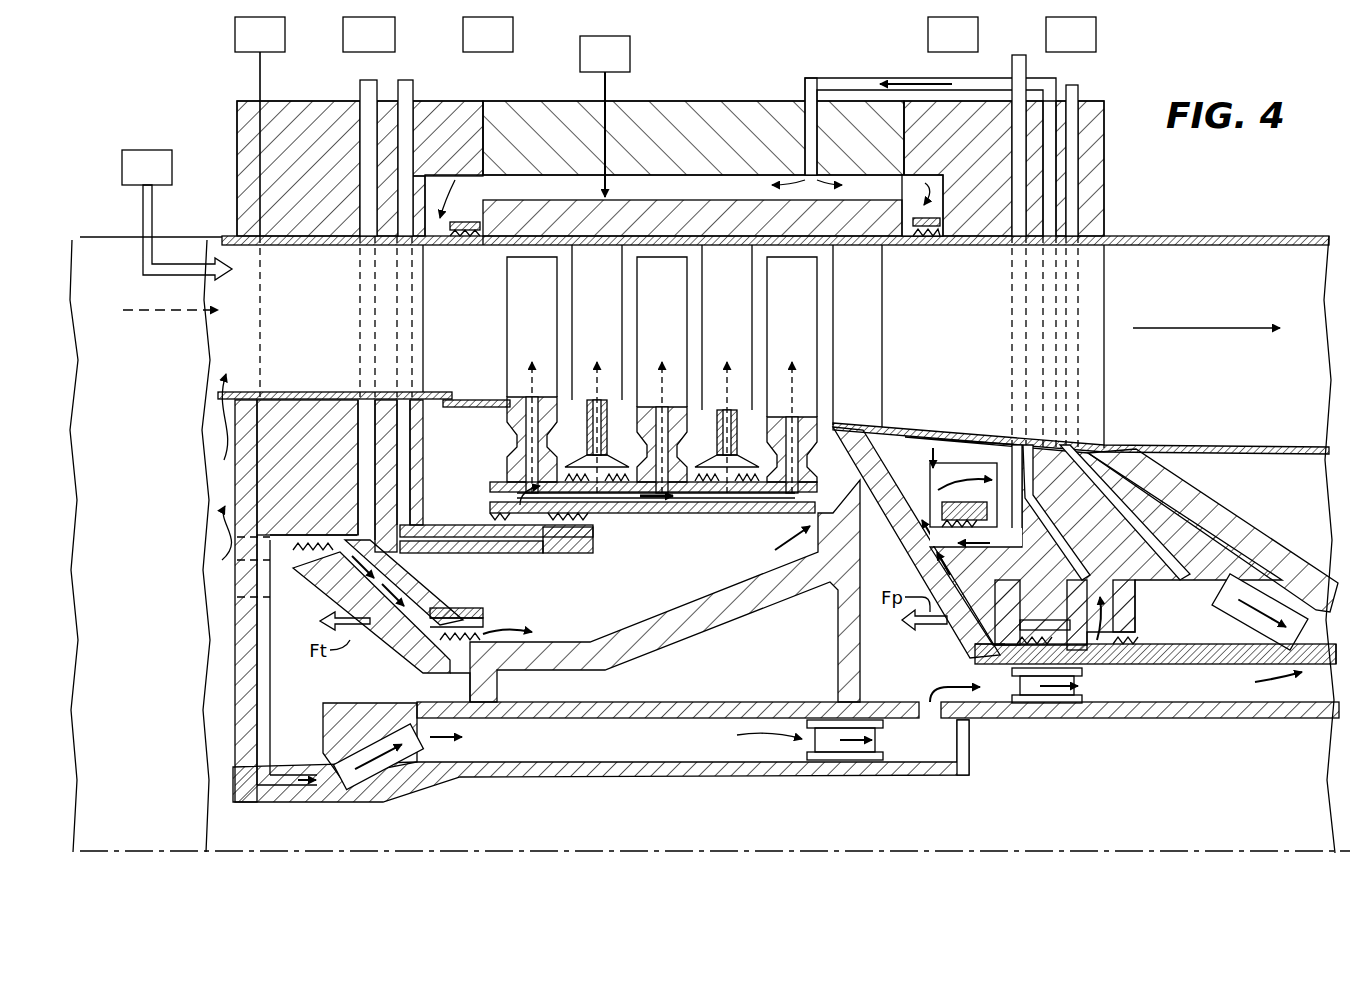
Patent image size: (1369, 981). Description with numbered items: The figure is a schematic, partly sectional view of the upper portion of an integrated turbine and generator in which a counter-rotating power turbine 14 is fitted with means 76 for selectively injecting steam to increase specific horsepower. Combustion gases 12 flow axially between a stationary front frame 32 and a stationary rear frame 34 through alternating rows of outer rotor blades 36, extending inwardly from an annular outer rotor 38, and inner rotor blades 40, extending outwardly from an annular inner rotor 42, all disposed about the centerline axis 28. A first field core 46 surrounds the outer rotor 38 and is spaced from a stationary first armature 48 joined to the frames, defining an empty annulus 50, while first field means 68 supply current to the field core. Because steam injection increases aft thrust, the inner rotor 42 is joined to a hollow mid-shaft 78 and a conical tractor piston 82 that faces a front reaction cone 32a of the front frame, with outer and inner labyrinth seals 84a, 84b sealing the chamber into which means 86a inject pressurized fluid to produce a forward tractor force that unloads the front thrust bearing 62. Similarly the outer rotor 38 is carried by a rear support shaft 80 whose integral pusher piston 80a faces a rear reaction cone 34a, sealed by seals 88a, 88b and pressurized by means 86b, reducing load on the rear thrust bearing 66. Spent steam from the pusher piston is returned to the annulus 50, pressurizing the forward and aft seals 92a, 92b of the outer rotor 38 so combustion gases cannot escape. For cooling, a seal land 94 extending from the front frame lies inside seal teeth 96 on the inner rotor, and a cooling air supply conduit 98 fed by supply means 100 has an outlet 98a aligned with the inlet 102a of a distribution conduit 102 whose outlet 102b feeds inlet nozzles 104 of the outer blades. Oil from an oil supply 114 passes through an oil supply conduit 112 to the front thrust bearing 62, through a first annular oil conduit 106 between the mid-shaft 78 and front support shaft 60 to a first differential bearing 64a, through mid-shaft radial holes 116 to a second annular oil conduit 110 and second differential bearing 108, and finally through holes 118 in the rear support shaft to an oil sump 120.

The combustion gases 12 is at (168, 322).
The power turbine 14 is at (1185, 212).
The centerline axis 28 is at (971, 851).
The front frame 32 is at (230, 490).
The front reaction cone 32a is at (432, 600).
The rear frame 34 is at (1105, 298).
The rear reaction cone 34a is at (1002, 600).
The outer rotor blades 36 is at (652, 336).
The outer rotor 38 is at (495, 248).
The inner rotor blades 40 is at (662, 337).
The inner rotor 42 is at (785, 518).
The first field core 46 is at (692, 218).
The first armature 48 is at (670, 168).
The annulus 50 is at (543, 188).
The front support shaft 60 is at (520, 776).
The front thrust bearing 62 is at (385, 770).
The first differential bearing 64a is at (850, 764).
The rear thrust bearing 66 is at (1284, 580).
The first field means 68 is at (605, 116).
The steam injection means 76 is at (177, 215).
The mid-shaft 78 is at (752, 702).
The rear support shaft 80 is at (1151, 666).
The pusher piston 80a is at (912, 574).
The tractor piston 82 is at (405, 645).
The outer labyrinth seal 84a is at (293, 560).
The inner labyrinth seal 84b is at (492, 622).
The pressurized fluid injecting means 86a is at (369, 80).
The pressurized fluid injecting means 86b is at (977, 232).
The outer labyrinth seal 88a is at (915, 494).
The inner labyrinth seal 88b is at (1007, 640).
The forward labyrinth seal 92a is at (452, 240).
The aft labyrinth seal 92b is at (926, 248).
The seal land 94 is at (482, 560).
The labyrinth seal teeth 96 is at (590, 520).
The cooling air supply conduit 98 is at (433, 530).
The supply conduit outlet 98a is at (565, 553).
The cooling air supply means 100 is at (455, 207).
The distribution conduit 102 is at (705, 500).
The distribution conduit inlet 102a is at (492, 497).
The distribution conduit outlet 102b is at (517, 435).
The inlet nozzles 104 is at (588, 414).
The first annular oil conduit 106 is at (616, 739).
The second differential bearing 108 is at (1099, 704).
The second annular oil conduit 110 is at (1116, 687).
The oil supply conduit 112 is at (240, 680).
The oil supply 114 is at (1071, 84).
The mid-shaft radial holes 116 is at (970, 745).
The rear support shaft holes 118 is at (1309, 668).
The oil sump 120 is at (1349, 547).